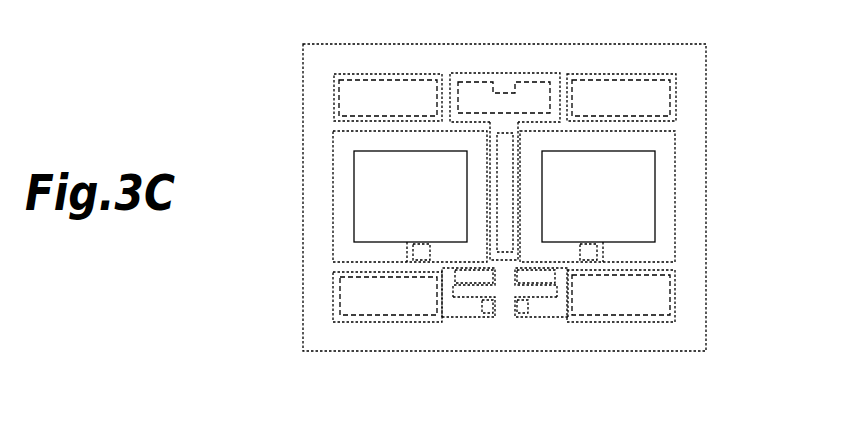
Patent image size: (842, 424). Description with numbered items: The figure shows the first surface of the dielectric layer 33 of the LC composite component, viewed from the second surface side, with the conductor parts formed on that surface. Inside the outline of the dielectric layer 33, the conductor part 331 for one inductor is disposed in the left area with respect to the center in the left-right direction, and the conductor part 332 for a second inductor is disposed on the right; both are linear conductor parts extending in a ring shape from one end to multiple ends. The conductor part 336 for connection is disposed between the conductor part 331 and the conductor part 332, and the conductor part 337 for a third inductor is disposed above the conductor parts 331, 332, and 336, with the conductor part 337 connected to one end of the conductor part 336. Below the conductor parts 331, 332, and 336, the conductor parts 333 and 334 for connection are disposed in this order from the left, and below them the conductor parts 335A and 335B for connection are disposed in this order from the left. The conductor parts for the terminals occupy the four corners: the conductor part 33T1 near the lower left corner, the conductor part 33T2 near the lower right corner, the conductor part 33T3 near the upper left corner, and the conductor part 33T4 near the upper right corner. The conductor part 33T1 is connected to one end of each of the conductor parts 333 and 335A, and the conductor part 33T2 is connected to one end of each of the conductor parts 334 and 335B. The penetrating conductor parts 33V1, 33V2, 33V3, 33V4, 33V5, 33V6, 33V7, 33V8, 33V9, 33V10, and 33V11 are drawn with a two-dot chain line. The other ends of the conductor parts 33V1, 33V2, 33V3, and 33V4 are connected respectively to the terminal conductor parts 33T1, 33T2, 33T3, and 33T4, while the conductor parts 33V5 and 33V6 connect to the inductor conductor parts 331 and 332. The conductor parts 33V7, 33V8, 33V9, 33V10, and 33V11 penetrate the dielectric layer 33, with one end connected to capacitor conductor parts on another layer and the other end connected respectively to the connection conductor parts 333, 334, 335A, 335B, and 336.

The dielectric layer 33 is at (706, 44).
The conductor part for the terminal 33T1 is at (333, 290).
The conductor part for the terminal 33T2 is at (676, 290).
The conductor part for the terminal 33T3 is at (333, 93).
The conductor part for the terminal 33T4 is at (676, 93).
The conductor part penetrating the dielectric layer 33V1 is at (340, 305).
The conductor part penetrating the dielectric layer 33V2 is at (670, 305).
The conductor part penetrating the dielectric layer 33V3 is at (339, 108).
The conductor part penetrating the dielectric layer 33V4 is at (670, 108).
The conductor part penetrating the dielectric layer 33V5 is at (413, 252).
The conductor part penetrating the dielectric layer 33V6 is at (597, 252).
The conductor part penetrating the dielectric layer 33V7 is at (470, 268).
The conductor part penetrating the dielectric layer 33V8 is at (540, 268).
The conductor part penetrating the dielectric layer 33V9 is at (488, 315).
The conductor part penetrating the dielectric layer 33V10 is at (523, 315).
The conductor part penetrating the dielectric layer 33V11 is at (513, 188).
The conductor part for the inductor 331 is at (333, 190).
The conductor part for the inductor 332 is at (676, 190).
The conductor part for the connection 333 is at (443, 318).
The conductor part for the connection 334 is at (568, 318).
The conductor part for the connection 335A is at (465, 317).
The conductor part for the connection 335B is at (547, 317).
The conductor part for the connection 336 is at (490, 190).
The conductor part for the inductor 337 is at (503, 73).